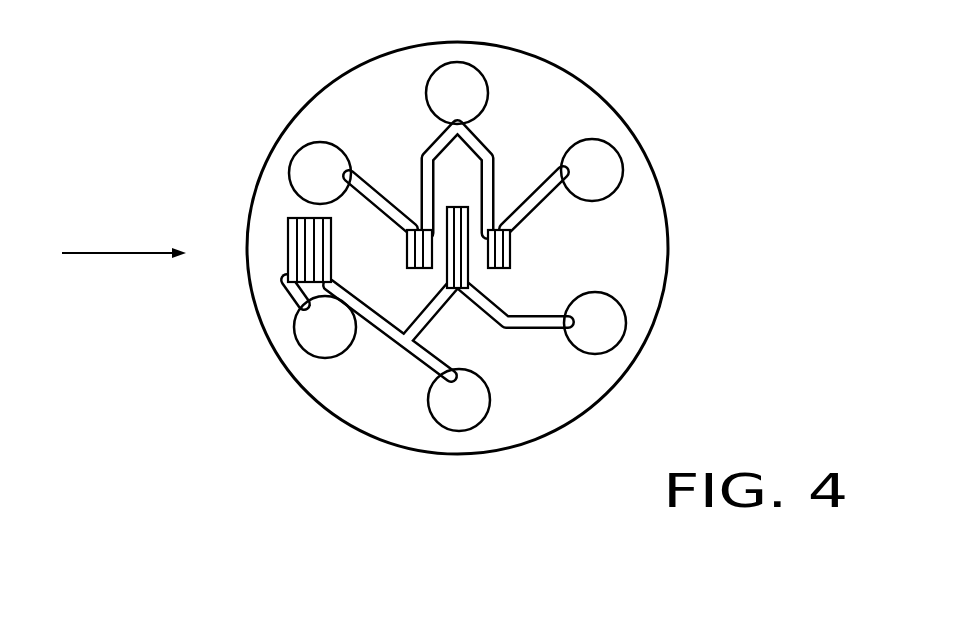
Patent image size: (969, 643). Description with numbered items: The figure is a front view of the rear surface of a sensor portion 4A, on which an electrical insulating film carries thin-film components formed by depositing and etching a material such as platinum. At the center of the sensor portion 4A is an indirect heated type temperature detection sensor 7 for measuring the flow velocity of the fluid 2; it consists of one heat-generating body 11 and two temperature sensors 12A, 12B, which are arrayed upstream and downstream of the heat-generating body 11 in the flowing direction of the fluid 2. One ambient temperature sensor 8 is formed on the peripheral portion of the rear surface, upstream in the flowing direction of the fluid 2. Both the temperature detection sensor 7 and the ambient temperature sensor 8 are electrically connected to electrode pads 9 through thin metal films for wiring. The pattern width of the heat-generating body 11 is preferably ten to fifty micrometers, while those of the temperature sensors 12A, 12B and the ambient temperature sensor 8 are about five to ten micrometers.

The fluid 2 is at (107, 252).
The sensor portion 4A is at (647, 205).
The temperature detection sensor 7 is at (380, 354).
The ambient temperature sensor 8 is at (287, 246).
The electrode pads 9 is at (475, 78).
The heat-generating body 11 is at (447, 272).
The temperature sensor 12A is at (404, 264).
The temperature sensor 12B is at (490, 267).